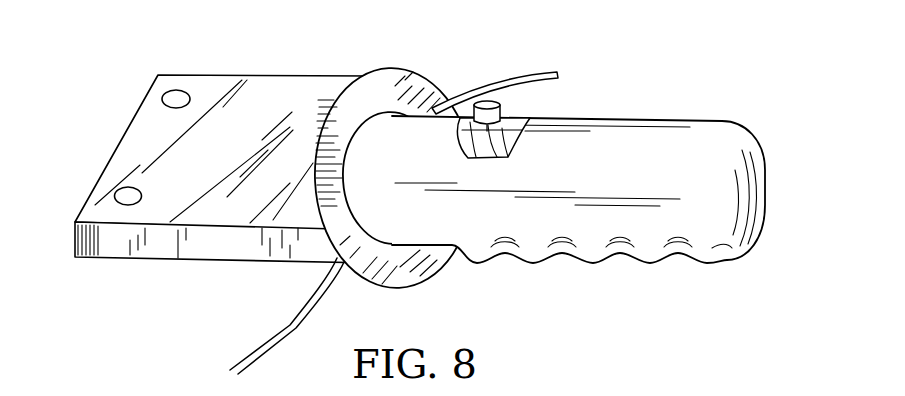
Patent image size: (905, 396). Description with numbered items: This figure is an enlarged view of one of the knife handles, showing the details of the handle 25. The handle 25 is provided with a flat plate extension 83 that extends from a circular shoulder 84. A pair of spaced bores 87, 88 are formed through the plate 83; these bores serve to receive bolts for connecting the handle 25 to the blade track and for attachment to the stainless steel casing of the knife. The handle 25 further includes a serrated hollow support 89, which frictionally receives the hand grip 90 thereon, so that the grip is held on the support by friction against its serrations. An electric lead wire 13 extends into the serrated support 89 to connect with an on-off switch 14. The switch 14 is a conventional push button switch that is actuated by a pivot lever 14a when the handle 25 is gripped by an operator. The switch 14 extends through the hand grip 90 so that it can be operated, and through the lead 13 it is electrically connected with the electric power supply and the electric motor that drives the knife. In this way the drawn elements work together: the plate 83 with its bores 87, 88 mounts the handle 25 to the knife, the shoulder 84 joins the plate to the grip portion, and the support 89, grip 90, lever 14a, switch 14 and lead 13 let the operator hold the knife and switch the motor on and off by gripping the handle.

The electric lead wire 13 is at (258, 348).
The on-off switch 14 is at (506, 109).
The pivot lever 14a is at (508, 84).
The handle 25 is at (665, 110).
The flat plate extension 83 is at (215, 218).
The circular shoulder 84 is at (407, 70).
The bore 87 is at (128, 205).
The bore 88 is at (185, 91).
The serrated hollow support 89 is at (512, 147).
The hand grip 90 is at (661, 263).